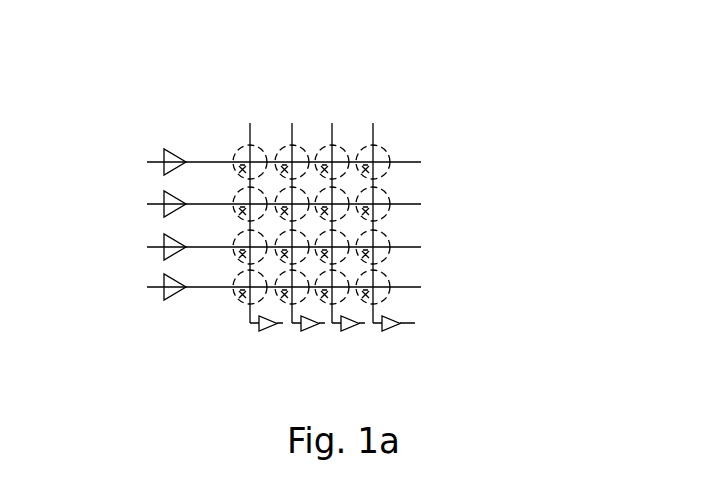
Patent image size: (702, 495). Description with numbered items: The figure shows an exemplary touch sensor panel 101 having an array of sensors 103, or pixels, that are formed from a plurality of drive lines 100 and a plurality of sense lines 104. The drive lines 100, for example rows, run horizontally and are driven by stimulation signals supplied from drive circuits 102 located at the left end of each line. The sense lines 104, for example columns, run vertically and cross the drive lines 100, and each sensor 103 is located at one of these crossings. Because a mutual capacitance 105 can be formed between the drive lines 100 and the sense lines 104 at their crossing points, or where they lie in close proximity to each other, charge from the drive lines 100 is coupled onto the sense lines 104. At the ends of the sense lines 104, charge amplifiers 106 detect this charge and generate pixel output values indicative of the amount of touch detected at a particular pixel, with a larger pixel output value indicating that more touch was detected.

The drive lines 100 is at (202, 161).
The touch sensor panel 101 is at (330, 221).
The drive circuits 102 is at (167, 300).
The sensors 103 is at (239, 149).
The sense lines 104 is at (373, 135).
The mutual capacitance 105 is at (243, 308).
The charge amplifiers 106 is at (388, 327).